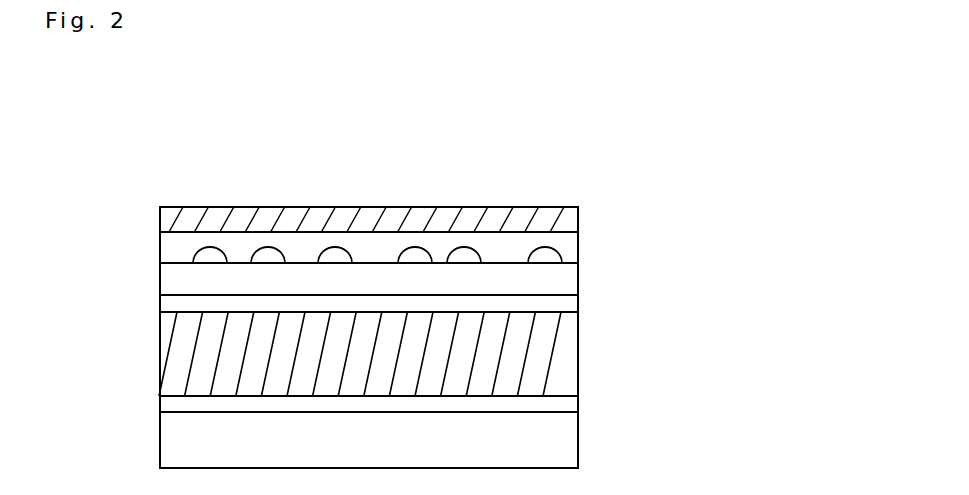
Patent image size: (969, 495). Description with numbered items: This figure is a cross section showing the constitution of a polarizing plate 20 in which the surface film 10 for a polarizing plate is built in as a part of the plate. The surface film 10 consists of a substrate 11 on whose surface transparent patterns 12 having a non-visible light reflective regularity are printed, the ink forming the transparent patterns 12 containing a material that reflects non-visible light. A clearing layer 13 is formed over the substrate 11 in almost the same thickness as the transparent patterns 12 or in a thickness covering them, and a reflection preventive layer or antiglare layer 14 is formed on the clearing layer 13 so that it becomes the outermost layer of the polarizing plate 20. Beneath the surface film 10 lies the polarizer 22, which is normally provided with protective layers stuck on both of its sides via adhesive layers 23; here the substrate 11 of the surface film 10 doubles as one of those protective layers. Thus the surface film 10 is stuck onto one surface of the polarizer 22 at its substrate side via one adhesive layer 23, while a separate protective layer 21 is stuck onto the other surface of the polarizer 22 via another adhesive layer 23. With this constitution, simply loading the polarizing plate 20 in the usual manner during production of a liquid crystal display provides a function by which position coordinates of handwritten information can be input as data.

The polarizing plate 20 is at (448, 295).
The surface film for a polarizing plate 10 is at (745, 162).
The reflection preventive layer or antiglare layer 14 is at (562, 218).
The clearing layer 13 is at (570, 242).
The transparent patterns 12 is at (208, 255).
The substrate 11 is at (570, 283).
The adhesive layer 23 is at (572, 303).
The polarizer 22 is at (570, 357).
The protective layer 21 is at (570, 447).